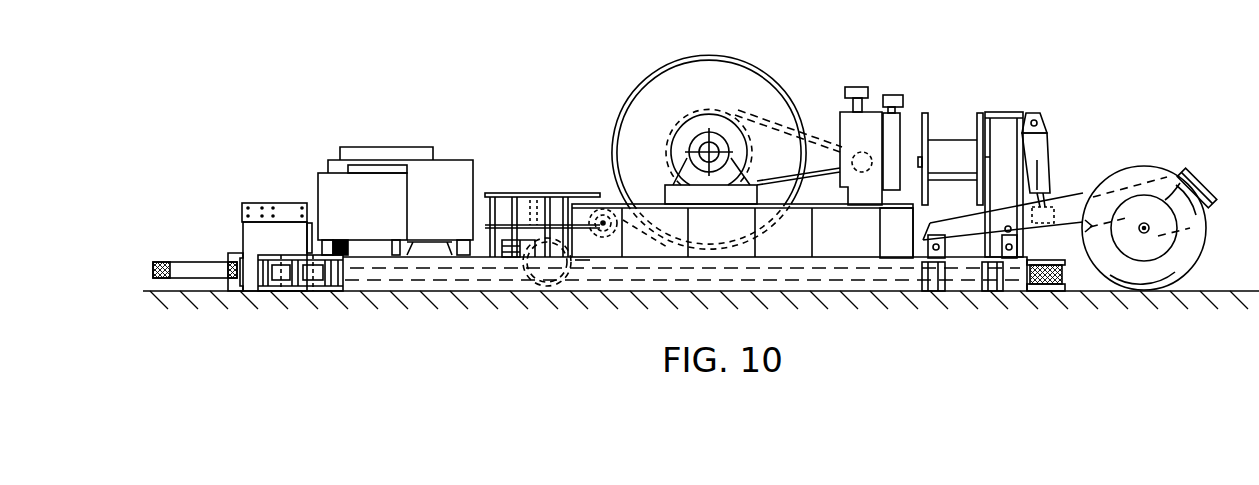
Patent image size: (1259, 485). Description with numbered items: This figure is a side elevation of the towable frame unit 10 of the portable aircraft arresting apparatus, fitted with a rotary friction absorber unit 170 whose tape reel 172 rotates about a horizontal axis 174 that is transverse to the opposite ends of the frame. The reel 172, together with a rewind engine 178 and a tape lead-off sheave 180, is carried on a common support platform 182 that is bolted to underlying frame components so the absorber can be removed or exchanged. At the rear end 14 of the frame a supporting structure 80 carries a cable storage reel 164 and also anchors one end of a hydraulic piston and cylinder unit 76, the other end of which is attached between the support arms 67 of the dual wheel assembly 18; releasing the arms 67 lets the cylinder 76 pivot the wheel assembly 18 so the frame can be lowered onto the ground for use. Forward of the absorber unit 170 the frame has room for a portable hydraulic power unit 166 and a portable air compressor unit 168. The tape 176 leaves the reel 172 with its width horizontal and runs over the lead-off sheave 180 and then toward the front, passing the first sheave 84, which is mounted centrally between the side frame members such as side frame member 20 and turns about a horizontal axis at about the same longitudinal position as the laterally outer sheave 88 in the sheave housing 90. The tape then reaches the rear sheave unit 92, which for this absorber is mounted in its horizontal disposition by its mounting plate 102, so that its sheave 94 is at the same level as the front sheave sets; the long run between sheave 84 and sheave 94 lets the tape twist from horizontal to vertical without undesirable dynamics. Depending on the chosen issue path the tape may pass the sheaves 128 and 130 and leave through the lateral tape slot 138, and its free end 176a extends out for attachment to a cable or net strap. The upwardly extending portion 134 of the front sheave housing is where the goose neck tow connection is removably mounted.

The towable frame unit 10 is at (523, 63).
The rear end 14 is at (1031, 85).
The dual wheel assembly 18 is at (1150, 135).
The side frame member 20 is at (620, 290).
The support arm 67 is at (1190, 172).
The hydraulic piston and cylinder unit 76 is at (1050, 132).
The supporting structure 80 is at (1003, 128).
The first sheave 84 is at (540, 285).
The laterally outer sheave 88 is at (537, 215).
The sheave housing 90 is at (512, 192).
The rear sheave unit 92 is at (1058, 256).
The sheave 94 is at (1055, 292).
The mounting plate 102 is at (1024, 293).
The sheave 128 is at (345, 286).
The sheave 130 is at (274, 272).
The upwardly extending portion 134 is at (245, 222).
The tape slot 138 is at (302, 285).
The cable storage reel 164 is at (950, 136).
The portable hydraulic power unit 166 is at (320, 187).
The portable air compressor unit 168 is at (455, 162).
The rotary friction absorber unit 170 is at (721, 102).
The tape reel 172 is at (633, 90).
The axis 174 is at (708, 150).
The tape 176 is at (582, 262).
The free end 176a is at (172, 265).
The rewind engine 178 is at (868, 110).
The tape lead-off sheave 180 is at (608, 210).
The common support platform 182 is at (830, 257).